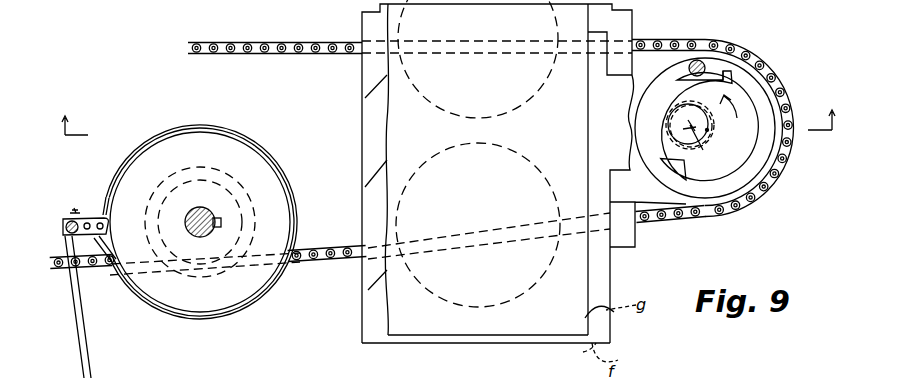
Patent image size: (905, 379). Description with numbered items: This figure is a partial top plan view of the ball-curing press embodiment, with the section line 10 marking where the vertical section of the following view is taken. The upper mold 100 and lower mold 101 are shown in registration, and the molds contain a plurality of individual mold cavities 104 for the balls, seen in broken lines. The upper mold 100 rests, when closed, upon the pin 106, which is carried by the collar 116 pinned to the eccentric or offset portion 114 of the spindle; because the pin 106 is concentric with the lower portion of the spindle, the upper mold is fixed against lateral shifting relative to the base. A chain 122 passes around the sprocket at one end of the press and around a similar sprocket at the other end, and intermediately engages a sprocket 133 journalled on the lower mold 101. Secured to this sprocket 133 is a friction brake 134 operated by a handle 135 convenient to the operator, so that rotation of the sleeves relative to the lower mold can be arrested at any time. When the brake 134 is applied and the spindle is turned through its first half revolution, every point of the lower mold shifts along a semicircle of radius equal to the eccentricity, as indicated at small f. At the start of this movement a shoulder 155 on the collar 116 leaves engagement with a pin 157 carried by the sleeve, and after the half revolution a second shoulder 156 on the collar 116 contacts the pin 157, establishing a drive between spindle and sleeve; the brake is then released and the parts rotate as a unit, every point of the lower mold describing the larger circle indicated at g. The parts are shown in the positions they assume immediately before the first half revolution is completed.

The section line 10— 10 is at (449, 113).
The upper mold 100 is at (432, 326).
The lower mold 101 is at (378, 340).
The mold cavities 104 is at (544, 281).
The pin 106 is at (668, 121).
The eccentric or offset portion 114 is at (708, 129).
The collar 116 is at (745, 150).
The chain 122 is at (332, 263).
The sprocket 133 is at (245, 197).
The friction brake 134 is at (130, 163).
The handle 135 is at (90, 355).
The shoulder 155 is at (680, 181).
The second shoulder 156 is at (725, 74).
The pin 157 is at (697, 60).